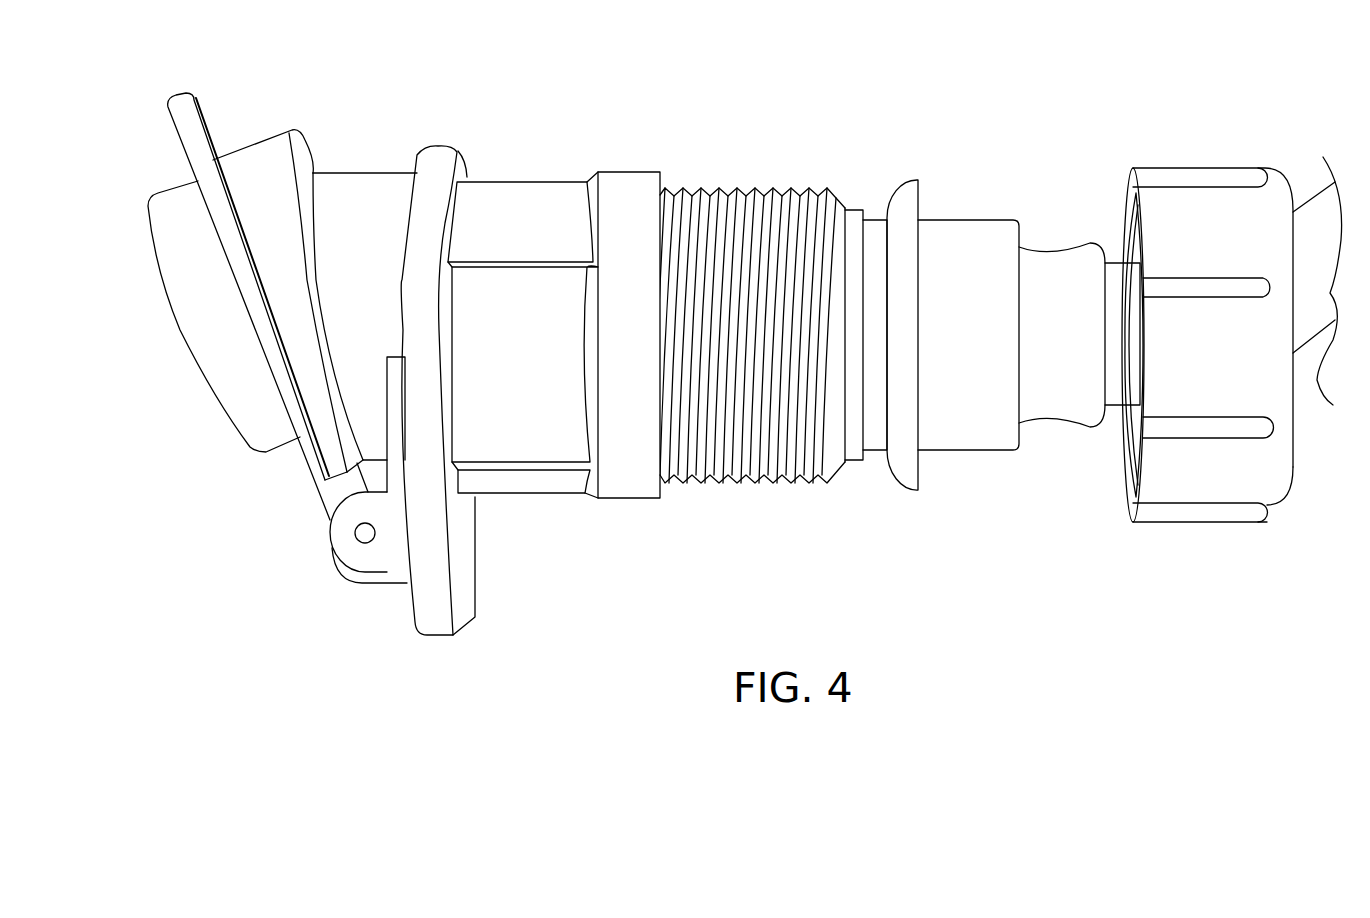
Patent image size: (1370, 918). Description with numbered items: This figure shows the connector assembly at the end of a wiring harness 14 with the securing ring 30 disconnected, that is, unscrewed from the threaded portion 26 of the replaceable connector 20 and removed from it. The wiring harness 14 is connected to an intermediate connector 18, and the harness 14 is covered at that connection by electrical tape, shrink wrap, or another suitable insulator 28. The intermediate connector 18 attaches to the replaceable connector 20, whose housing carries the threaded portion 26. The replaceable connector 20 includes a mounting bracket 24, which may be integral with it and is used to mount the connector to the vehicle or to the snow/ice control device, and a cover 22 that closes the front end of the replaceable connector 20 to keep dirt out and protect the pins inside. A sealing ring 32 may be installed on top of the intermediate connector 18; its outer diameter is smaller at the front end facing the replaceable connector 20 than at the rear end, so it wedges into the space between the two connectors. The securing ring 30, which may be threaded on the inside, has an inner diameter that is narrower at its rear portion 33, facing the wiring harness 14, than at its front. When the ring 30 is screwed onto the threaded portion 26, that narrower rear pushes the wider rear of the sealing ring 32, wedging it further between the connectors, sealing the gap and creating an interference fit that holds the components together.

The wiring harness 14 is at (1330, 287).
The intermediate connector 18 is at (970, 237).
The replaceable connector 20 is at (357, 183).
The cover 22 is at (186, 107).
The mounting bracket 24 is at (443, 162).
The threaded portion 26 is at (810, 187).
The insulator 28 is at (1062, 267).
The securing ring 30 is at (1217, 203).
The sealing ring 32 is at (887, 218).
The rear portion 33 is at (1293, 467).